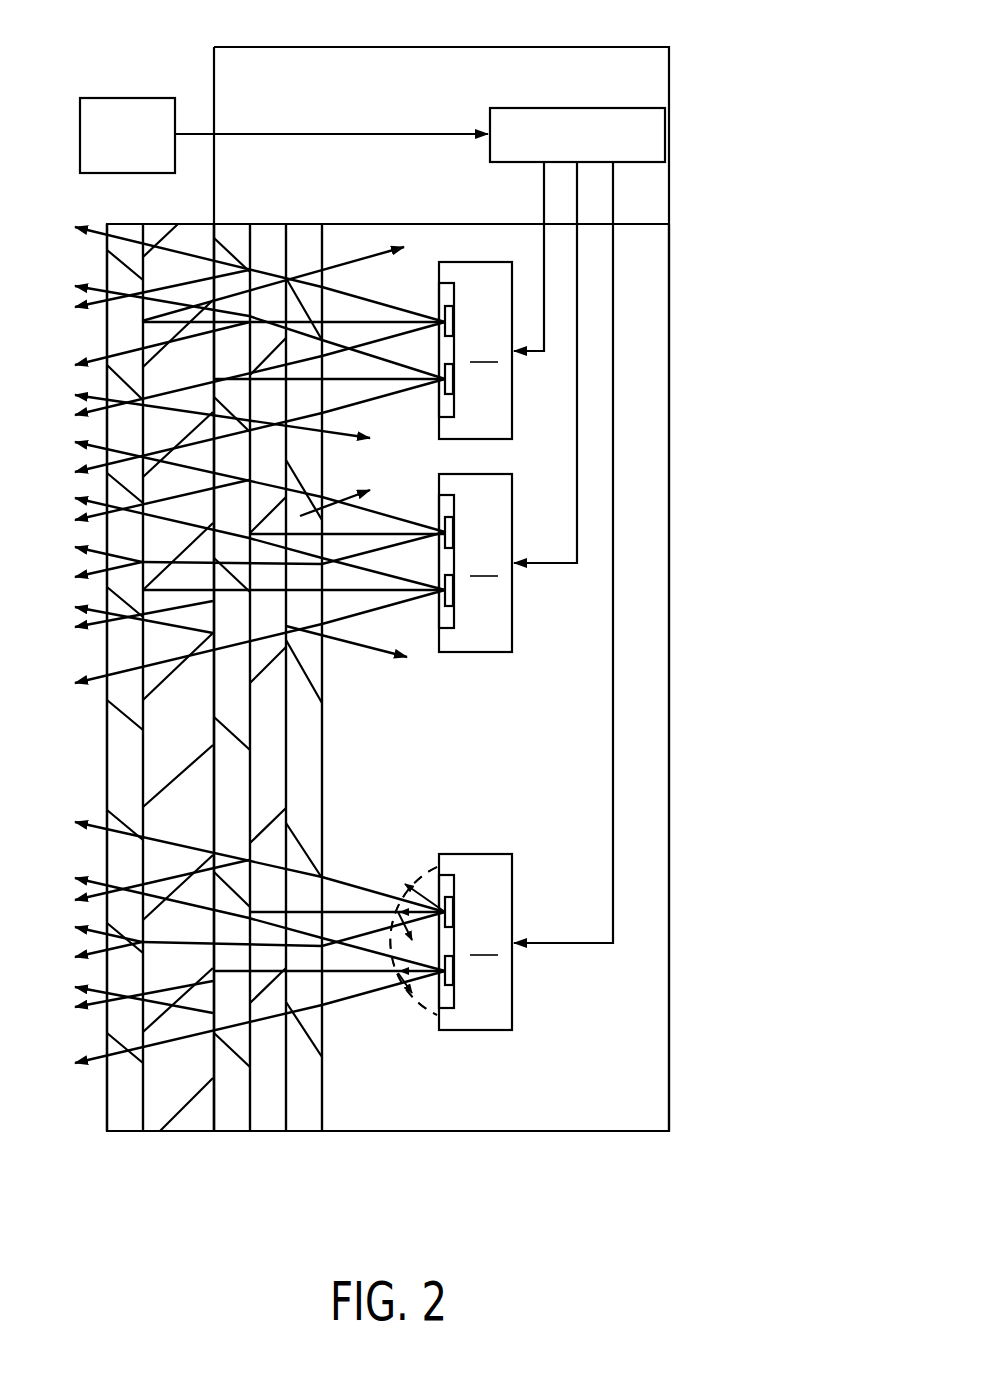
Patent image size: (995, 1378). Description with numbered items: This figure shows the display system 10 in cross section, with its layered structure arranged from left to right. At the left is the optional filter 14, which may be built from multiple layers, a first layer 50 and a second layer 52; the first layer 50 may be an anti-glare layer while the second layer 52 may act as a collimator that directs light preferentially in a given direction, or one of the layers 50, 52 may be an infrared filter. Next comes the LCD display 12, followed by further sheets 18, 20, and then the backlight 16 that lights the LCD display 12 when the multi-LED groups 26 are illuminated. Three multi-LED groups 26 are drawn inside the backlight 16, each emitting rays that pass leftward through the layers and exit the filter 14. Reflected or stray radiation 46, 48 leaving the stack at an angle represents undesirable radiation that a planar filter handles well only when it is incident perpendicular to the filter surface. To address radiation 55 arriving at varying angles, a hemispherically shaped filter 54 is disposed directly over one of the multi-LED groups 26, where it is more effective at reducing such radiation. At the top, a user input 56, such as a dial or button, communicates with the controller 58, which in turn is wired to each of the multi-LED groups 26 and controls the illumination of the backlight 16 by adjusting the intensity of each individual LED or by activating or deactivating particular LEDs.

The display system 10 is at (745, 476).
The LCD display 12 is at (230, 1132).
The filter 14 is at (210, 1186).
The backlight 16 is at (470, 1131).
The diffuser layer 18 is at (267, 1133).
The optical layer 20 is at (305, 1133).
The multi-LED groups 26 is at (475, 646).
The undesirable radiation 46 is at (346, 262).
The undesirable radiation 48 is at (345, 493).
The first layer 50 is at (122, 1132).
The second layer 52 is at (175, 1132).
The filter 54 is at (422, 1008).
The radiation 55 is at (418, 873).
The user input 56 is at (128, 98).
The controller 58 is at (578, 107).